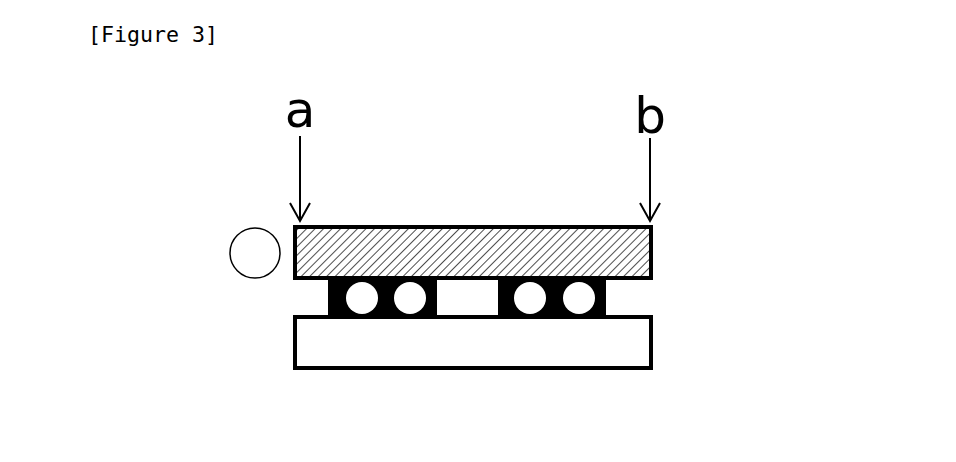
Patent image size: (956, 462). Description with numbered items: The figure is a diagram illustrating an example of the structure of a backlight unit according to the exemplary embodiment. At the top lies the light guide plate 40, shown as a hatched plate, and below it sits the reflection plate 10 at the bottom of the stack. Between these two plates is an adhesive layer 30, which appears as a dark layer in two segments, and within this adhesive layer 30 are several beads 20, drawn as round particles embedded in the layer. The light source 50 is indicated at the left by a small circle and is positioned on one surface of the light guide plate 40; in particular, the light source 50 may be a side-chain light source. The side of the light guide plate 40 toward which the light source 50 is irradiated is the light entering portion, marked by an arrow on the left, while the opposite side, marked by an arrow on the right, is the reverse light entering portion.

The reflection plate 10 is at (615, 349).
The bead 20 is at (579, 298).
The adhesive layer 30 is at (608, 297).
The light guide plate 40 is at (613, 253).
The light source 50 is at (252, 262).